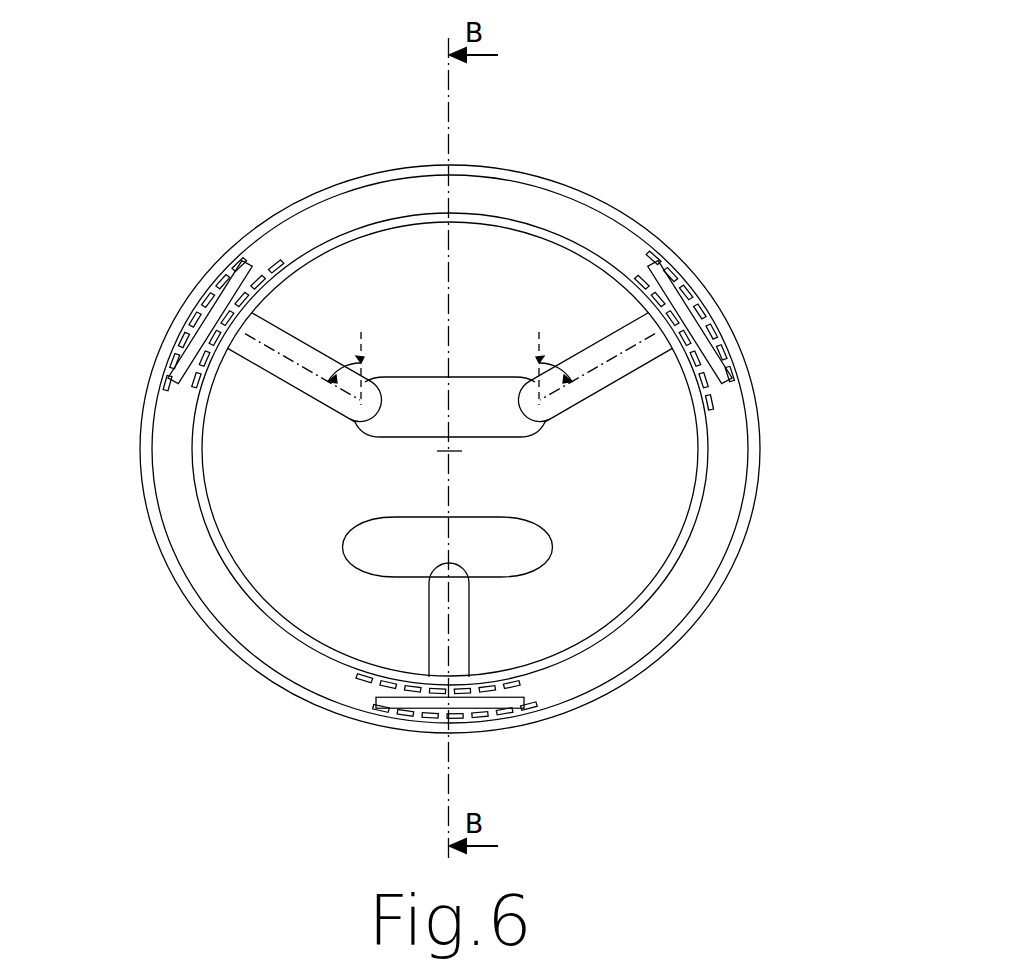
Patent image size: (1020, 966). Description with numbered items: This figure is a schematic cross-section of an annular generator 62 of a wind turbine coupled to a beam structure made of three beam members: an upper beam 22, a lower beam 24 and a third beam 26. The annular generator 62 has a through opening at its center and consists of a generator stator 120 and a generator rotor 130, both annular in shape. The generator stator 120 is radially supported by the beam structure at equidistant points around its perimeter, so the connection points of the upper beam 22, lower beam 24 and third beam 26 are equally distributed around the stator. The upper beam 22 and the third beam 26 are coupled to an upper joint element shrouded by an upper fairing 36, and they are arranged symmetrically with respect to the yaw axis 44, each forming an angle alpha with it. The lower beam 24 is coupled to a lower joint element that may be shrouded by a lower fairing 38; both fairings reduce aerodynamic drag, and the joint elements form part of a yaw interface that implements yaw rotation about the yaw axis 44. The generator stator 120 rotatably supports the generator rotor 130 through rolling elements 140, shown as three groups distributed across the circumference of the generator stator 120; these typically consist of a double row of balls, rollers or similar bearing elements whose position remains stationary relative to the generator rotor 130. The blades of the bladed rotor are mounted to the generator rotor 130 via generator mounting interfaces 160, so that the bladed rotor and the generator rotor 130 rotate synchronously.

The upper beam 22 is at (267, 360).
The lower beam 24 is at (457, 620).
The third beam 26 is at (547, 352).
The upper fairing 36 is at (375, 438).
The lower fairing 38 is at (518, 540).
The yaw axis 44 is at (448, 110).
The annular generator 62 is at (187, 687).
The generator stator 120 is at (547, 183).
The generator rotor 130 is at (385, 198).
The rolling elements 140 is at (175, 380).
The generator mounting interfaces 160 is at (212, 322).